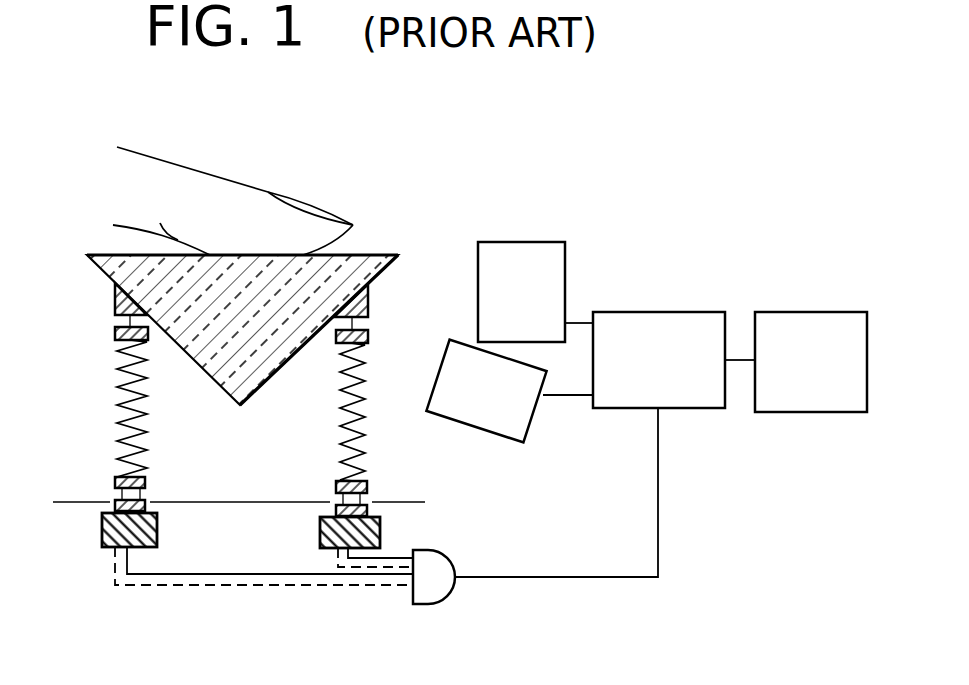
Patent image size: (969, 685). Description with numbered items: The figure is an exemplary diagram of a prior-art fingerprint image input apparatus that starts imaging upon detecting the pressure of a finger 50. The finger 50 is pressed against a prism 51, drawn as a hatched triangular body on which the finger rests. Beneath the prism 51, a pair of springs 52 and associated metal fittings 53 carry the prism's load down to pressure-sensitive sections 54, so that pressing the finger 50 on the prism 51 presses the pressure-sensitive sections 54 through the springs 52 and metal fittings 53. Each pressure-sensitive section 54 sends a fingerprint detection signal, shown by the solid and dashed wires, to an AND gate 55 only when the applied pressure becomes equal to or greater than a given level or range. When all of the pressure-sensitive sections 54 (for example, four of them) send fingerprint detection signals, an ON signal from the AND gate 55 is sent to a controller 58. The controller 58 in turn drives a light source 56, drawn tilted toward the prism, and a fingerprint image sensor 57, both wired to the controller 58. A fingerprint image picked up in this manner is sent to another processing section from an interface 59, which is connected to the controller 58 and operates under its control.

The finger 50 is at (245, 192).
The prism 51 is at (370, 255).
The spring 52 is at (125, 388).
The metal fitting 53 is at (146, 482).
The pressure-sensitive section 54 is at (102, 530).
The AND gate 55 is at (442, 551).
The light source 56 is at (488, 436).
The fingerprint image sensor 57 is at (535, 242).
The controller 58 is at (647, 312).
The interface 59 is at (798, 312).